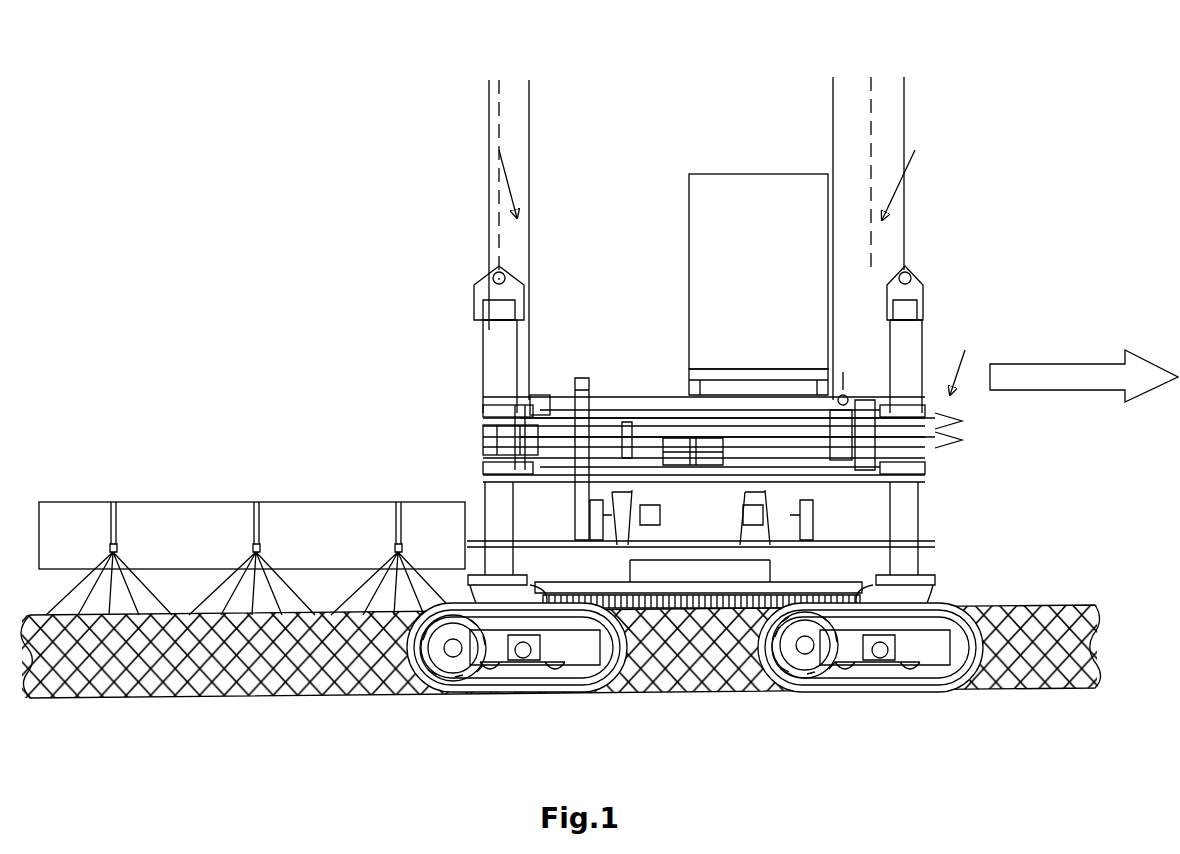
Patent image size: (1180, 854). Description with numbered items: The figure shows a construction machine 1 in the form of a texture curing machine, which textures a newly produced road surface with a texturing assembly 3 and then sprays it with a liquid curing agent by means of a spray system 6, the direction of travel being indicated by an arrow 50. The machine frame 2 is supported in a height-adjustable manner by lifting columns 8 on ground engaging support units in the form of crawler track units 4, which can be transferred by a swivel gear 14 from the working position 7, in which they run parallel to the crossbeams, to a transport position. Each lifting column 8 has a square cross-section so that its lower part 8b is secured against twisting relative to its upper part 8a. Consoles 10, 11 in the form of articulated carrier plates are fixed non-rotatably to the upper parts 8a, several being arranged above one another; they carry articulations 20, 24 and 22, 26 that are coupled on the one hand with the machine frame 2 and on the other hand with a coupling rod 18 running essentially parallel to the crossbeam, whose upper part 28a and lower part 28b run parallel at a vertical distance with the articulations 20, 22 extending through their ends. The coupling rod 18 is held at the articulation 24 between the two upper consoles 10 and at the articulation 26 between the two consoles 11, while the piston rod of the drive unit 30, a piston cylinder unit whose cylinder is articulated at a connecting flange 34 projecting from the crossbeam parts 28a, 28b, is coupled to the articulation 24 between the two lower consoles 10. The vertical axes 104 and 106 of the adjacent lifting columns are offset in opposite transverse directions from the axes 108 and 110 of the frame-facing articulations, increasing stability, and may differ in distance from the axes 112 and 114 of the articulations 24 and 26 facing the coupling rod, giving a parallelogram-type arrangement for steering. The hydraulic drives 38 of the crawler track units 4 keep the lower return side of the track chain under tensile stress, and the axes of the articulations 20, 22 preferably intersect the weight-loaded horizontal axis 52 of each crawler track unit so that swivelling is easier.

The construction machine 1 is at (503, 173).
The machine frame 2 is at (843, 383).
The texturing assembly 3 is at (650, 640).
The crawler track units 4 is at (475, 688).
The spray system 6 is at (180, 510).
The working position 7 is at (905, 174).
The lifting columns 8 is at (960, 359).
The upper part of the lifting column 8a is at (487, 330).
The lower part of the lifting column 8b is at (495, 515).
The consoles 10 is at (487, 410).
The consoles 11 is at (950, 438).
The swivel gear 14 is at (530, 395).
The coupling rod 18 is at (735, 420).
The articulation 20 is at (537, 410).
The articulation 22 is at (862, 410).
The articulation 24 is at (487, 445).
The articulation 26 is at (835, 440).
The upper part of the crossbeam 28a is at (635, 400).
The lower part of the crossbeam 28b is at (555, 480).
The drive unit 30 is at (632, 450).
The connecting flange 34 is at (697, 465).
The hydraulic drives 38 is at (422, 685).
The arrow 50 is at (1085, 367).
The weight-loaded horizontal axis 52 is at (525, 665).
The vertical axis of the lifting column 104 is at (500, 88).
The vertical axis of the lifting column 106 is at (905, 100).
The axis of the articulation 108 is at (530, 128).
The axis of the articulation 110 is at (872, 85).
The axis of the articulation 112 is at (489, 108).
The axis of the articulation 114 is at (833, 95).